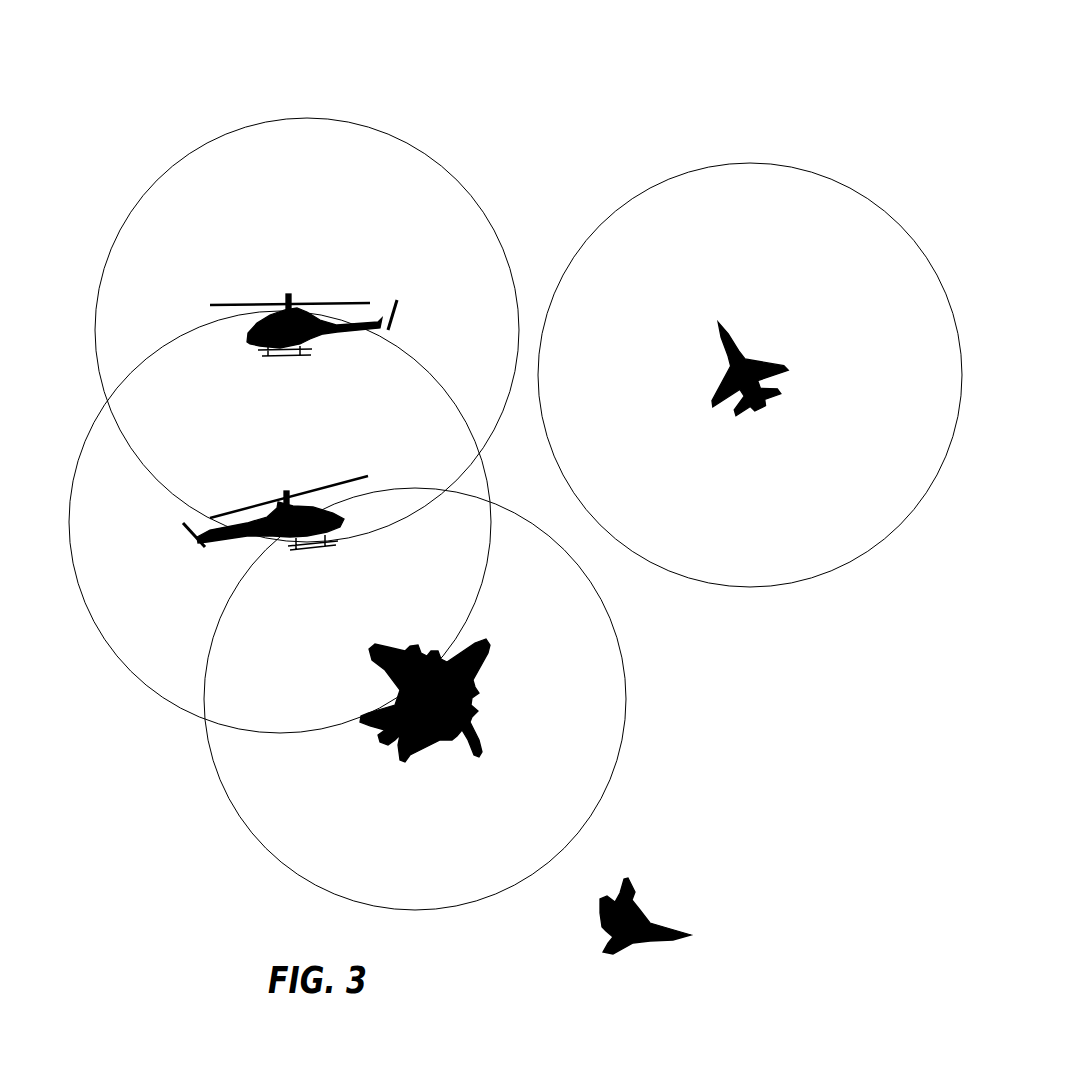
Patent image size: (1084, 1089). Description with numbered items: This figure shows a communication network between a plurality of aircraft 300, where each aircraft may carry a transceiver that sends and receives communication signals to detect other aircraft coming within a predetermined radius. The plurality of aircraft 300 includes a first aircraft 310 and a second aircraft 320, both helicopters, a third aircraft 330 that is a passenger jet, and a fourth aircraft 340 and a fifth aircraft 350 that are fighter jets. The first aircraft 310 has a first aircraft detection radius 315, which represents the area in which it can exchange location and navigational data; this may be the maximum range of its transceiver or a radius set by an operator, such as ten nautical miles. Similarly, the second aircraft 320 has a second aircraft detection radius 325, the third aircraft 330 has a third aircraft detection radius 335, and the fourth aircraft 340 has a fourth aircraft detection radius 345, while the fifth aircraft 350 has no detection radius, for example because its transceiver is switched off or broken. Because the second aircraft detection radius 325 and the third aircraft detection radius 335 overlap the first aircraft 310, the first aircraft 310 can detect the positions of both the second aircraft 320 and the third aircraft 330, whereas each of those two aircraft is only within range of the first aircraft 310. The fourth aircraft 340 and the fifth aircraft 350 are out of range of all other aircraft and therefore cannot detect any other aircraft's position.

The plurality of aircraft 300 is at (235, 46).
The first aircraft 310 is at (287, 490).
The first aircraft detection radius 315 is at (140, 683).
The second aircraft 320 is at (288, 297).
The second aircraft detection radius 325 is at (223, 131).
The third aircraft 330 is at (371, 648).
The third aircraft detection radius 335 is at (264, 848).
The fourth aircraft 340 is at (717, 322).
The fourth aircraft detection radius 345 is at (743, 163).
The fifth aircraft 350 is at (615, 950).